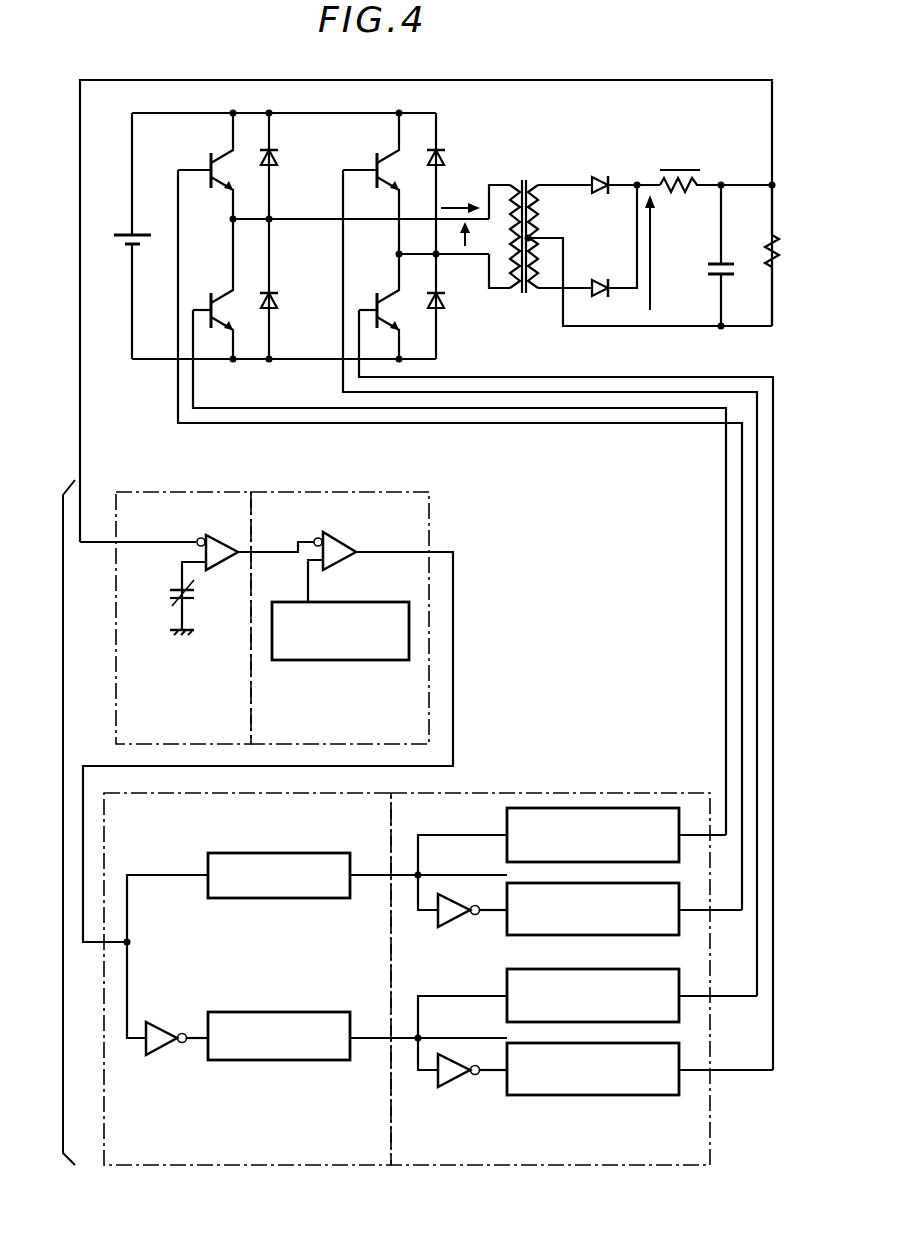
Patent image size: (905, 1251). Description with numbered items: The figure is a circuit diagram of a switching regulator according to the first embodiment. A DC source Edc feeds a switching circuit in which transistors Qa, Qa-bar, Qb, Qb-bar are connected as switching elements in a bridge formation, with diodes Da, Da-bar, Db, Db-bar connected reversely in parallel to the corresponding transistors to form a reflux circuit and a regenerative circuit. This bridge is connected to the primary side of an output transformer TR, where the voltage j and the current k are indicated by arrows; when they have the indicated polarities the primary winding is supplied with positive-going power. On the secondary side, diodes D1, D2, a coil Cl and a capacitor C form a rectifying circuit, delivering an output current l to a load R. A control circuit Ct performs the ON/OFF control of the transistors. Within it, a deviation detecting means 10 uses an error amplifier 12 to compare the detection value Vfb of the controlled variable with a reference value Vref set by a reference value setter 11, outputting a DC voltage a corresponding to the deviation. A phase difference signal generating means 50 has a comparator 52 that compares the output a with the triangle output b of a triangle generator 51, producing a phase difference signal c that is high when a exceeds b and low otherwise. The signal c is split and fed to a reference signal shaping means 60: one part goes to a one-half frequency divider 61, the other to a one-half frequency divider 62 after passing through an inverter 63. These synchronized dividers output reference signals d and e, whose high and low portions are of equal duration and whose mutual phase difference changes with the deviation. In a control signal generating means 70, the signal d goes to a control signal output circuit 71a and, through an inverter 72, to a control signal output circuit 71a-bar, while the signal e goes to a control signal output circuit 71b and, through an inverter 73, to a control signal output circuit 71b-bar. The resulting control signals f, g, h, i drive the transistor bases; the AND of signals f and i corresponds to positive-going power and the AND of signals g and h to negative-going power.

The DC power source Edc is at (127, 230).
The transistor Qa is at (208, 165).
The transistor Qa-bar is at (212, 296).
The transistor Qb is at (375, 165).
The transistor Qb-bar is at (376, 296).
The diode Da is at (272, 170).
The diode Da-bar is at (272, 288).
The diode Db is at (447, 160).
The diode Db-bar is at (446, 312).
The output transformer TR is at (545, 293).
The diode D1 is at (598, 195).
The diode D2 is at (604, 280).
The coil Cl is at (682, 196).
The capacitor C is at (710, 278).
The load R is at (770, 236).
The current k is at (460, 197).
The voltage j is at (470, 235).
The output current l is at (651, 252).
The deviation detecting means 10 is at (190, 492).
The reference value setter 11 is at (194, 600).
The error amplifier 12 is at (224, 536).
The detection value Vfb is at (160, 524).
The reference value Vref is at (178, 562).
The phase difference signal generating means 50 is at (320, 492).
The triangle generator 51 is at (396, 602).
The comparator 52 is at (340, 536).
The DC voltage a is at (258, 546).
The output b is at (314, 592).
The control circuit Ct is at (52, 822).
The reference signal shaping means 60 is at (175, 793).
The 1/2 frequency divider 61 is at (278, 898).
The 1/2 frequency divider 62 is at (334, 1012).
The inverter 63 is at (165, 1022).
The phase difference signal c is at (138, 937).
The reference signal d is at (365, 862).
The reference signal e is at (374, 1048).
The control signal generating means 70 is at (611, 793).
The control signal output circuit 71a is at (507, 858).
The control signal output circuit 71a-bar is at (507, 928).
The control signal output circuit 71b is at (507, 1018).
The control signal output circuit 71b-bar is at (507, 1090).
The inverter 72 is at (438, 926).
The inverter 73 is at (438, 1085).
The control signal f is at (692, 845).
The control signal g is at (693, 920).
The control signal h is at (693, 1006).
The control signal i is at (693, 1080).